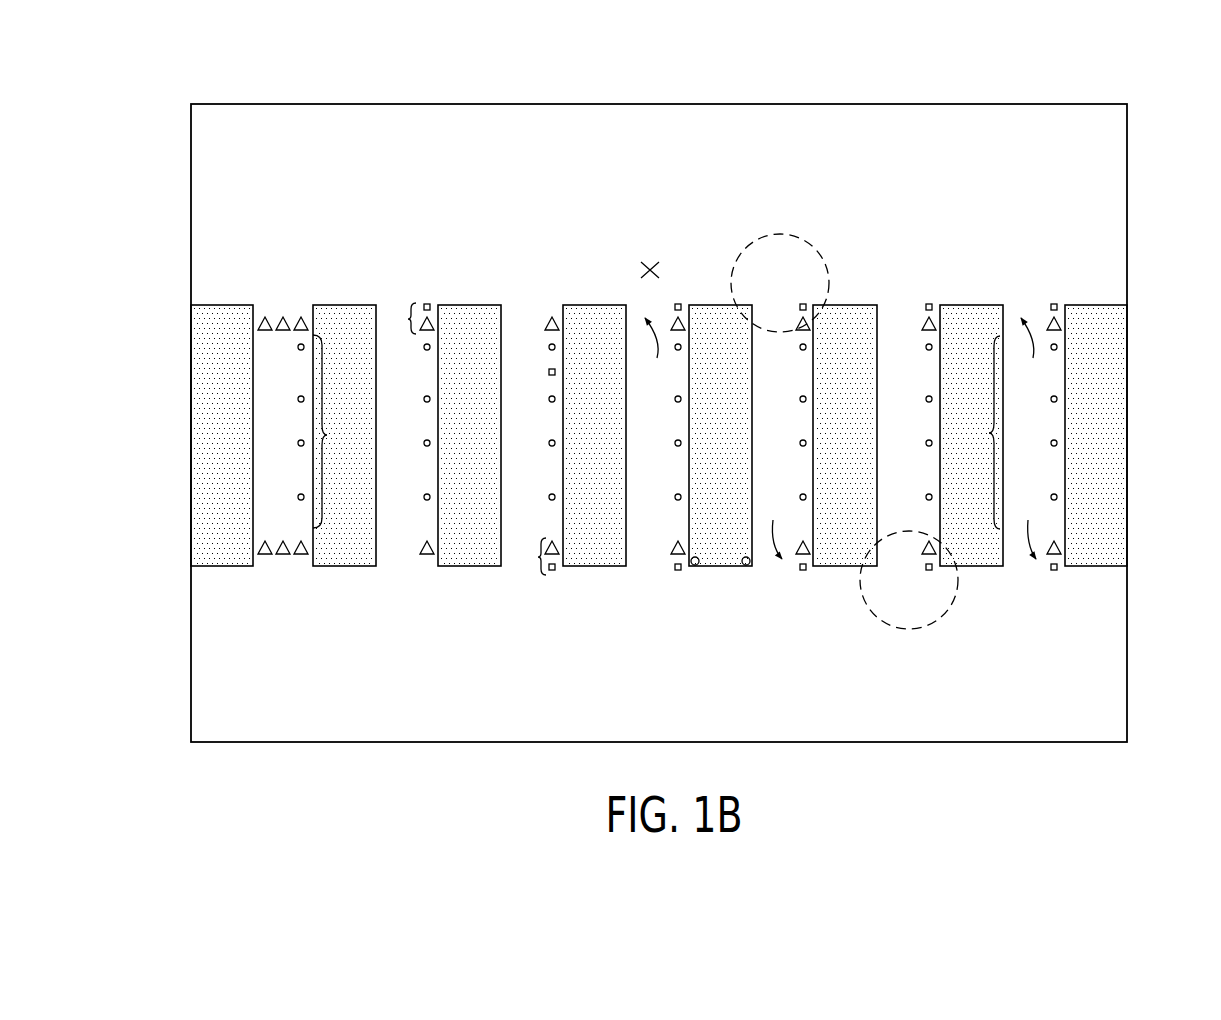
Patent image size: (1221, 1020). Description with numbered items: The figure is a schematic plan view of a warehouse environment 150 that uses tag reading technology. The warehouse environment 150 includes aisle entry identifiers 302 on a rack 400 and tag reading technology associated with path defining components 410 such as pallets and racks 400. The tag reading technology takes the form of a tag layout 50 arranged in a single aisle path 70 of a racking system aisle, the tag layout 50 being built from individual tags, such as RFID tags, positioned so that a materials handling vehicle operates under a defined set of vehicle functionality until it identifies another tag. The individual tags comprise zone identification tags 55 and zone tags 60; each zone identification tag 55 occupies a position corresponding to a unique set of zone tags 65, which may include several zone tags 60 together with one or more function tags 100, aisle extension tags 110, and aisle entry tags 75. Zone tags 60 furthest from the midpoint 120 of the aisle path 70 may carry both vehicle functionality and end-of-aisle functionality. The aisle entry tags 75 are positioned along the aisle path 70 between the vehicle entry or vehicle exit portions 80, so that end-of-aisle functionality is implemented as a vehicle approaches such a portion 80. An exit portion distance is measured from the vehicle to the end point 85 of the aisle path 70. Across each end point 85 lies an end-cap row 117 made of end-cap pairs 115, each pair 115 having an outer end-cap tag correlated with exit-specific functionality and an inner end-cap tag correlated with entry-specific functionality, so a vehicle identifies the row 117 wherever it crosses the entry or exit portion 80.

The tag layout 50 is at (1165, 105).
The warehouse environment 150 is at (1128, 242).
The midpoint 120 is at (277, 419).
The end-cap row 117 is at (282, 288).
The function tag 100 is at (428, 303).
The end-cap pair 115 is at (464, 440).
The zone identification tag 55 is at (547, 321).
The aisle entry tag 75 is at (548, 372).
The zone tag 60 is at (550, 401).
The unique set of zone tags 65 is at (989, 433).
The end point 85 is at (843, 438).
The aisle path 70 is at (909, 303).
The vehicle entry or vehicle exit portion 80 is at (756, 243).
The aisle extension tag 110 is at (650, 266).
The aisle entry identifier 302 is at (694, 567).
The rack 400 is at (720, 572).
The path defining component 410 is at (1108, 481).